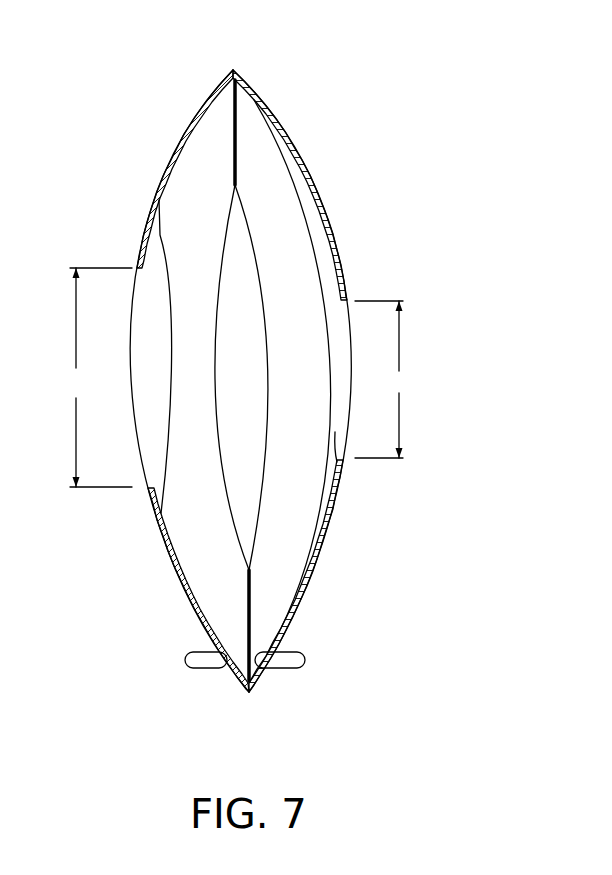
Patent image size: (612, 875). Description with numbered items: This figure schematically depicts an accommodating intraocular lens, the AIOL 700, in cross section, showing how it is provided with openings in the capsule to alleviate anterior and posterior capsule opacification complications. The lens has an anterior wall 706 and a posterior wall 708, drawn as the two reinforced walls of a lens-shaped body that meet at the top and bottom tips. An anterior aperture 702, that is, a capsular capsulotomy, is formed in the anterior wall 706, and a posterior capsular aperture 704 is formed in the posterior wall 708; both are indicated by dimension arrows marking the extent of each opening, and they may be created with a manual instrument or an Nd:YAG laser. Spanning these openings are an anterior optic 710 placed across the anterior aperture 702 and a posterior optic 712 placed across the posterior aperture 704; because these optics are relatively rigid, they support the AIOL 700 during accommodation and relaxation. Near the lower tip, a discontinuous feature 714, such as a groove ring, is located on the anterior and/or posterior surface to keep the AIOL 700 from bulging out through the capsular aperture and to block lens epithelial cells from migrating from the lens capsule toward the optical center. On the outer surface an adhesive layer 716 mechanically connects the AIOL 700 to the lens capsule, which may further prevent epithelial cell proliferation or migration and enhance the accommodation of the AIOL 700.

The AIOL 700 is at (334, 67).
The anterior aperture 702 is at (97, 377).
The posterior capsular aperture 704 is at (386, 379).
The anterior wall 706 is at (167, 176).
The posterior wall 708 is at (298, 156).
The anterior optic 710 is at (147, 410).
The posterior optic 712 is at (343, 478).
The discontinuous feature 714 is at (185, 662).
The adhesive layer 716 is at (333, 547).